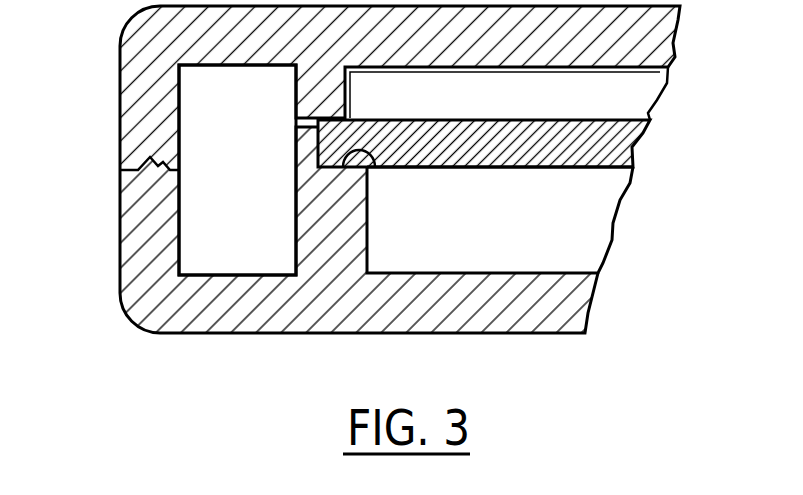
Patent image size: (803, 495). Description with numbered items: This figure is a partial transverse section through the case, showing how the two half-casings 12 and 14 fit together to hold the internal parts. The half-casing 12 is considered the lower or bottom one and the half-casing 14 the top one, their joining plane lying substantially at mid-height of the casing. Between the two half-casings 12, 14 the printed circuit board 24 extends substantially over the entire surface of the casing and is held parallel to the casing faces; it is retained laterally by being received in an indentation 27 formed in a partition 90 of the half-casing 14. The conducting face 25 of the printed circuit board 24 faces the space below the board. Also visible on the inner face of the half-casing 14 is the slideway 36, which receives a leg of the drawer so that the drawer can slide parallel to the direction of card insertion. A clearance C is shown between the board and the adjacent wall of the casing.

The half-casing 12 is at (136, 97).
The half-casing 14 is at (137, 233).
The printed circuit board 24 is at (617, 138).
The conducting face 25 is at (519, 170).
The indentation 27 is at (367, 162).
The slideway 36 is at (270, 212).
The partition 90 is at (348, 243).
The clearance gap C is at (527, 88).